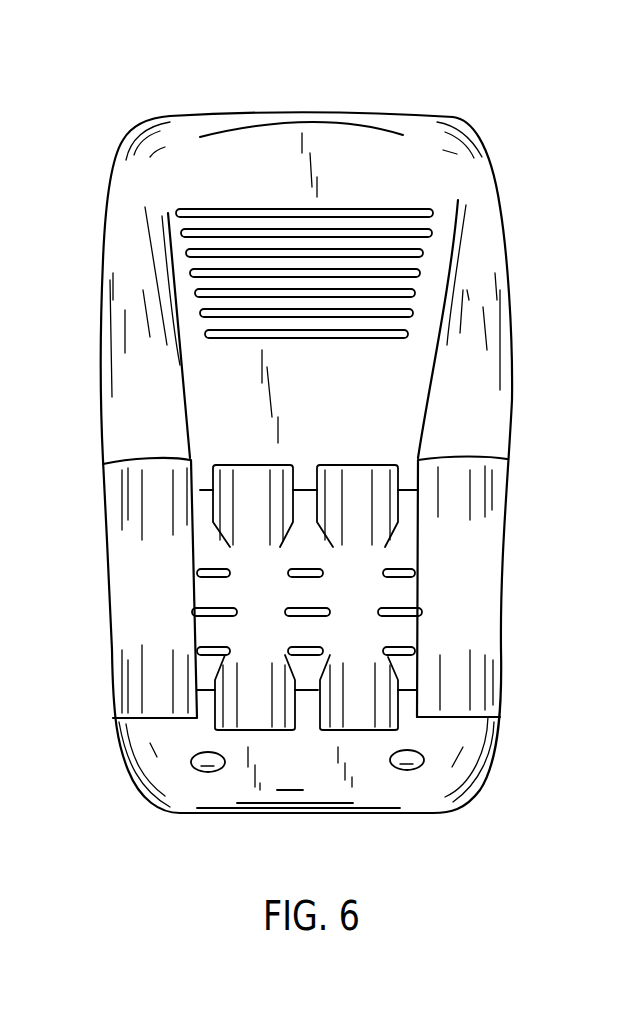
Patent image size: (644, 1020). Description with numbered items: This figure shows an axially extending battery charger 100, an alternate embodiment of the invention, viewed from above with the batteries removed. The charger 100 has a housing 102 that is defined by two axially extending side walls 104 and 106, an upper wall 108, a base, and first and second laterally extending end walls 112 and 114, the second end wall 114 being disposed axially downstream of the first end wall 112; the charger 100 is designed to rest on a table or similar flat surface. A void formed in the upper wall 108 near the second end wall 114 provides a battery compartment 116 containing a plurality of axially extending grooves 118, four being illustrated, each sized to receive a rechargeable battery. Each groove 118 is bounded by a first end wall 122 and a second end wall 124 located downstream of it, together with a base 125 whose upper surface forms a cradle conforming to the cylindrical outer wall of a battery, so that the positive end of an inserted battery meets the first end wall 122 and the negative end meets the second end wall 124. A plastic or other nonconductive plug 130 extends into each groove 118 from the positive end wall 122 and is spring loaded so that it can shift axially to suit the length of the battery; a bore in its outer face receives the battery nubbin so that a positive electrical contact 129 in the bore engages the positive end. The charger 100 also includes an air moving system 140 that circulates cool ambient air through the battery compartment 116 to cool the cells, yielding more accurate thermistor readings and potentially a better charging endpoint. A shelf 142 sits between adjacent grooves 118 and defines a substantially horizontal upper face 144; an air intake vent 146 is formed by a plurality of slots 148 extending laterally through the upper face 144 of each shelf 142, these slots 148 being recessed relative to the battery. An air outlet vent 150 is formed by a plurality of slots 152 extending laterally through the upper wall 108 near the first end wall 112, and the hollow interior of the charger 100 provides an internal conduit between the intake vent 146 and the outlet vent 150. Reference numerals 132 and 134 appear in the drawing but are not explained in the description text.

The charger 100 is at (578, 202).
The housing 102 is at (479, 132).
The side wall 104 is at (510, 358).
The side wall 106 is at (100, 421).
The upper wall 108 is at (361, 391).
The first end wall 112 is at (306, 114).
The second end wall 114 is at (312, 818).
The battery compartment 116 is at (503, 578).
The groove 118 is at (471, 612).
The first end wall 122 is at (467, 452).
The second end wall 124 is at (463, 721).
The base 125 is at (472, 635).
The positive electrical contact 129 is at (458, 510).
The plug 130 is at (475, 485).
The left side block with lower bracket 132 is at (247, 695).
The lower bracket bottom 134 is at (262, 720).
The air moving system 140 is at (442, 208).
The shelf 142 is at (414, 633).
The upper face 144 is at (379, 597).
The air intake vent 146 is at (428, 580).
The slots 148 is at (212, 650).
The air outlet vent 150 is at (428, 243).
The slots 152 is at (176, 278).